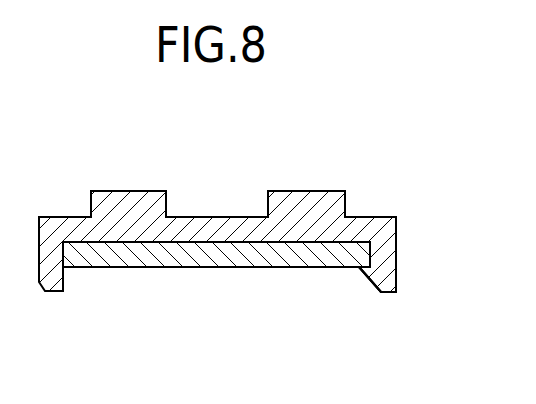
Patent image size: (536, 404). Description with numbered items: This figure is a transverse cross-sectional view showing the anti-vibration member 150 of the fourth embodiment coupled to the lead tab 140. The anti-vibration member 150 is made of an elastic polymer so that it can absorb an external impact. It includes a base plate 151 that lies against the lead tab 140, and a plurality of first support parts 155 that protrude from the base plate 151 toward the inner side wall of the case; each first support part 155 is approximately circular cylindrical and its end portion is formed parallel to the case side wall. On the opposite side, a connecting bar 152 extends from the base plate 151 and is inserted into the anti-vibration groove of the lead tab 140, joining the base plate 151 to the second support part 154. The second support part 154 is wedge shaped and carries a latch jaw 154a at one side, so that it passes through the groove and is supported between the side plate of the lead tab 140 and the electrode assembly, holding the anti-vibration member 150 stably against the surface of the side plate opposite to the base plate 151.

The lead tab 140 is at (217, 267).
The anti-vibration member 150 is at (403, 227).
The base plate 151 is at (218, 226).
The connecting bar 152 is at (393, 248).
The second support part 154 is at (387, 278).
The latch jaw 154a is at (363, 275).
The first support part 155 is at (302, 203).